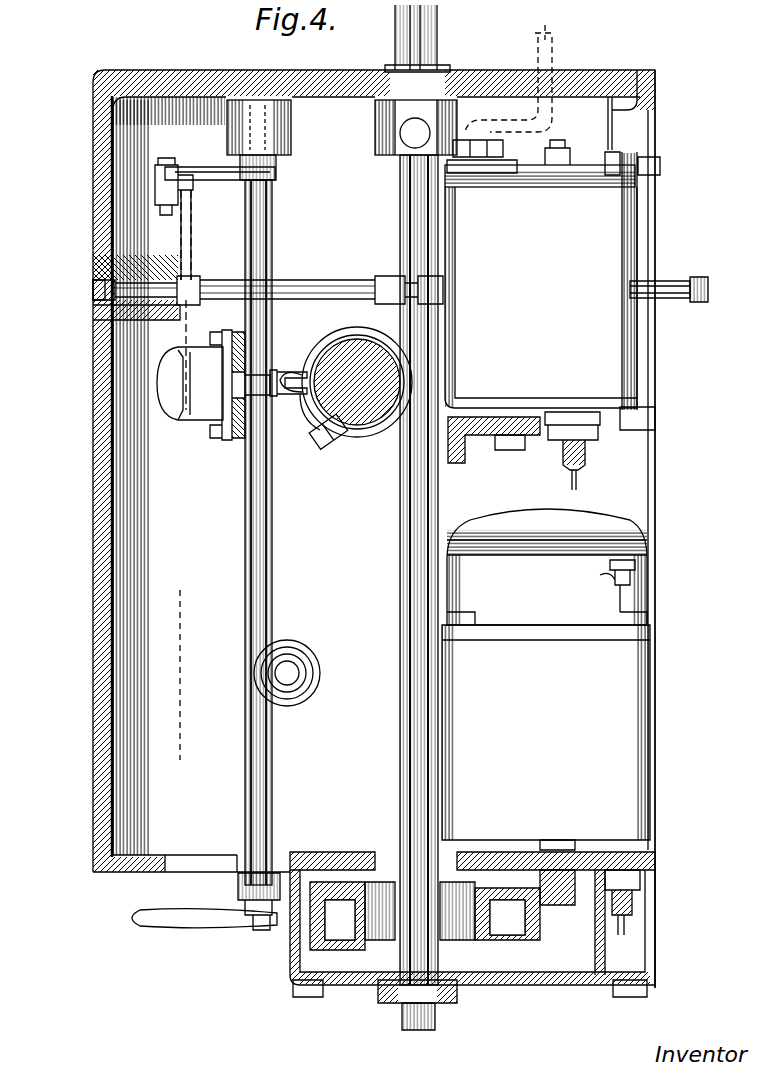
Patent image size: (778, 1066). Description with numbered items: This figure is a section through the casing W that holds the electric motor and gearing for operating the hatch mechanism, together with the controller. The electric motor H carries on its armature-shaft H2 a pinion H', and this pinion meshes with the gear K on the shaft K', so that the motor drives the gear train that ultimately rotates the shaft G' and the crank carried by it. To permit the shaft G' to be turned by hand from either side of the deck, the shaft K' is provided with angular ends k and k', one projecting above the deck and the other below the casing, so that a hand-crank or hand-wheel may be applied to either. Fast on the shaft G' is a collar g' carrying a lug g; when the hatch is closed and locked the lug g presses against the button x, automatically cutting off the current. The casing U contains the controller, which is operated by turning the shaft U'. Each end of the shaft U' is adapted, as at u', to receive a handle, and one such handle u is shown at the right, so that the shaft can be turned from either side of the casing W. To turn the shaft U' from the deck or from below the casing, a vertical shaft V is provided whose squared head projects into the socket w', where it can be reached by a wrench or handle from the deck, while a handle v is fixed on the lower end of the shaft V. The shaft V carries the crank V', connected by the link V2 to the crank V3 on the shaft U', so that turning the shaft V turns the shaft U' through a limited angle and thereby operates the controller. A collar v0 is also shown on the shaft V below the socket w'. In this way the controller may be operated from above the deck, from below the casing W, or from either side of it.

The casing W is at (650, 525).
The shaft K' is at (436, 542).
The angular end k' is at (470, 68).
The crank V' is at (238, 130).
The socket w' is at (230, 127).
The collar v0 is at (277, 180).
The vertical shaft V is at (241, 555).
The handle v is at (188, 928).
The link V2 is at (165, 183).
The crank V3 is at (183, 220).
The shaft U' is at (393, 280).
The handle u is at (713, 291).
The shaft end u' is at (76, 303).
The casing U is at (550, 315).
The shaft G' is at (357, 406).
The collar g' is at (296, 356).
The lug g is at (309, 422).
The button x is at (240, 398).
The electric motor H is at (546, 679).
The gear K is at (472, 939).
The angular end k is at (418, 1034).
The armature-shaft H2 is at (520, 958).
The pinion H' is at (582, 946).